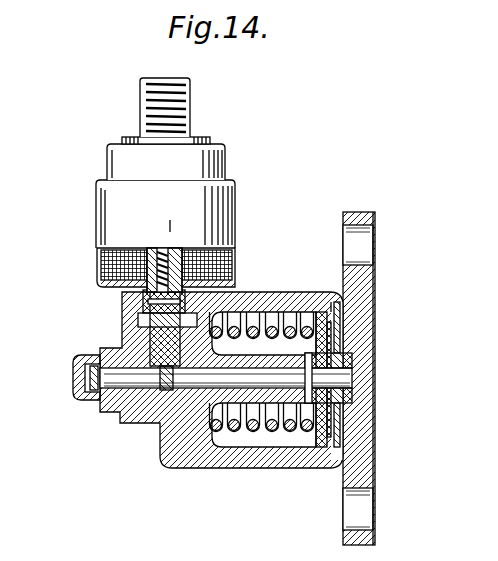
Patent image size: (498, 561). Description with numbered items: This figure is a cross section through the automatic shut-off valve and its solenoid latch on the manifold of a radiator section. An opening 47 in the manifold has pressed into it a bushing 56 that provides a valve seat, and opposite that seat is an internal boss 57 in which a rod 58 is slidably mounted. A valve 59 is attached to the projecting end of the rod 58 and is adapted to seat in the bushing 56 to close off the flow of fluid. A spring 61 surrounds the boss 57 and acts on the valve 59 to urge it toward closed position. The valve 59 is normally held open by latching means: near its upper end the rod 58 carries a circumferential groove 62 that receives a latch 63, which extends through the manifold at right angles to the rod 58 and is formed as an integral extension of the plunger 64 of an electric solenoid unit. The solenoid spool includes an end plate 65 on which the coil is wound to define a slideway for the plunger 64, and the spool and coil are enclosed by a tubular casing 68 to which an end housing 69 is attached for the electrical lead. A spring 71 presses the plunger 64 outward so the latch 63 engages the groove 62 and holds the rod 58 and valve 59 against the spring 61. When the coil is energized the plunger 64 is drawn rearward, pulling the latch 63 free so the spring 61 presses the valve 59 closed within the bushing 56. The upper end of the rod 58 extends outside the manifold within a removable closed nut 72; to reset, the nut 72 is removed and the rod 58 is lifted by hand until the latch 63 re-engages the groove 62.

The opening 47 is at (350, 447).
The bushing 56 is at (347, 301).
The internal boss 57 is at (243, 354).
The rod 58 is at (272, 378).
The valve 59 is at (322, 440).
The spring 61 is at (272, 433).
The circumferential groove 62 is at (168, 378).
The latch 63 is at (162, 335).
The plunger 64 is at (147, 300).
The end plate 65 is at (97, 283).
The tubular casing 68 is at (224, 194).
The end housing 69 is at (212, 146).
The spring 71 is at (168, 248).
The closed nut 72 is at (75, 372).